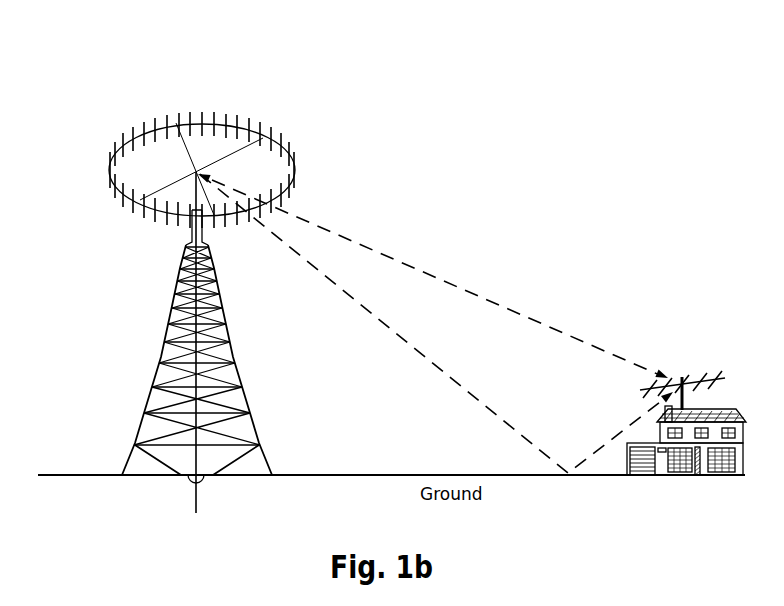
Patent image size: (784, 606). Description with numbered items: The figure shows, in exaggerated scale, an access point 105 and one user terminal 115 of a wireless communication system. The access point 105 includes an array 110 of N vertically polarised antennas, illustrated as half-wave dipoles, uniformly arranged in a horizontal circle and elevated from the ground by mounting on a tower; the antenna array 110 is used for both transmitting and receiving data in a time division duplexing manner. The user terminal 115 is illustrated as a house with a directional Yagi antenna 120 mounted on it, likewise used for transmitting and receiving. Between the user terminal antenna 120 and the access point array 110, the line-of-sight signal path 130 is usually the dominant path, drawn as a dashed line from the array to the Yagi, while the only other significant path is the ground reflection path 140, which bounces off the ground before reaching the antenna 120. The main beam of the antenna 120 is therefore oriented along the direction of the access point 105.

The access point 105 is at (167, 93).
The array of antennas 110 is at (113, 148).
The user terminal 115 is at (654, 325).
The directional antenna 120 is at (706, 377).
The line-of-sight signal path 130 is at (437, 278).
The ground reflection path 140 is at (343, 290).